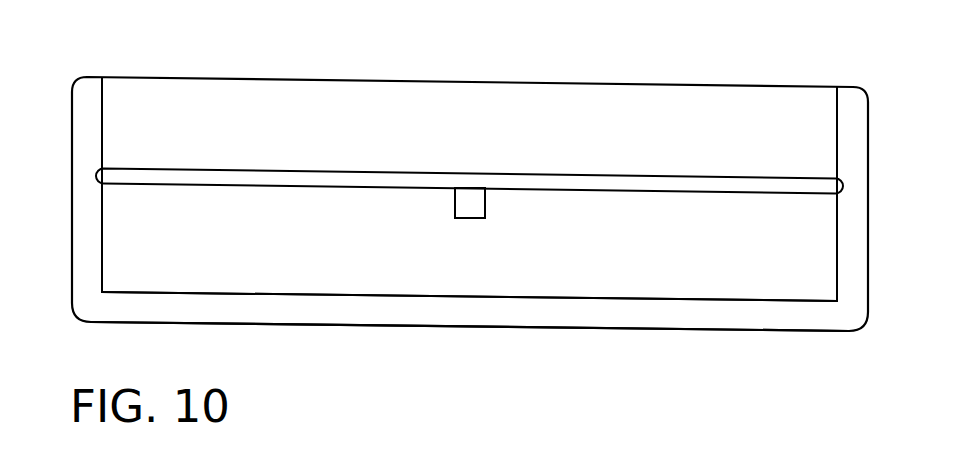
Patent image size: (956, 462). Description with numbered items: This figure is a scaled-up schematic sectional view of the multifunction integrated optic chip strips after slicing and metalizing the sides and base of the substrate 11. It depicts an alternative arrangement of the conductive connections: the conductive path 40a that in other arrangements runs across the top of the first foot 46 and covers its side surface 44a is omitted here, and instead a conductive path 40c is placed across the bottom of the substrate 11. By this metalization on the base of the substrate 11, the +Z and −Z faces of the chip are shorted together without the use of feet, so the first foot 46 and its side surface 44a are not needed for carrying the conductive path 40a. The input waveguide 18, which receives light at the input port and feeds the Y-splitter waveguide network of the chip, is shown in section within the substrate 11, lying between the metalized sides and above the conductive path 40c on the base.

The conductive path 40a is at (91, 76).
The conductive path 40c is at (430, 326).
The side surface 44a is at (103, 131).
The first foot 46 is at (377, 145).
The substrate 11 is at (372, 260).
The input waveguide 18 is at (478, 210).